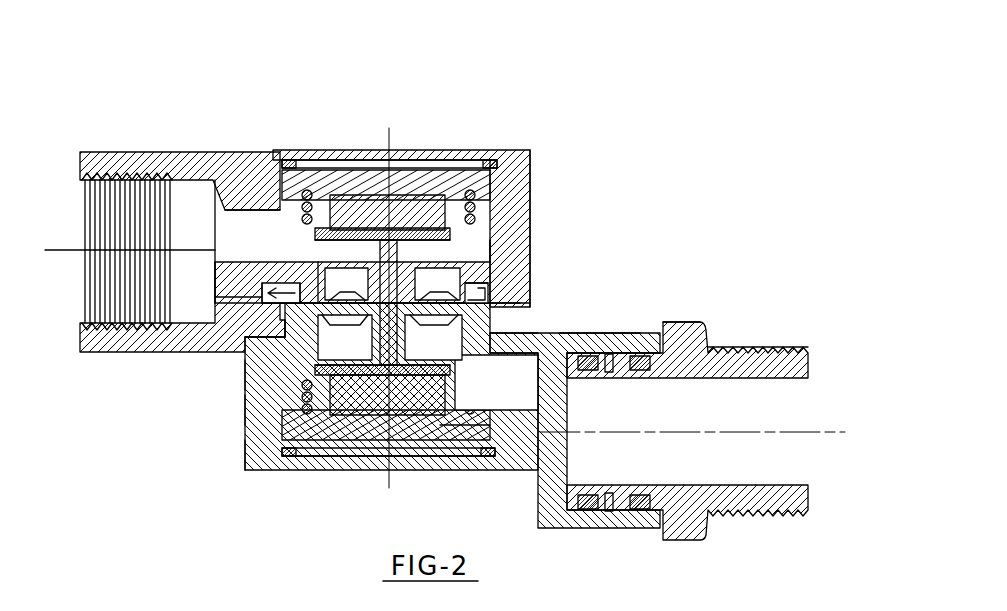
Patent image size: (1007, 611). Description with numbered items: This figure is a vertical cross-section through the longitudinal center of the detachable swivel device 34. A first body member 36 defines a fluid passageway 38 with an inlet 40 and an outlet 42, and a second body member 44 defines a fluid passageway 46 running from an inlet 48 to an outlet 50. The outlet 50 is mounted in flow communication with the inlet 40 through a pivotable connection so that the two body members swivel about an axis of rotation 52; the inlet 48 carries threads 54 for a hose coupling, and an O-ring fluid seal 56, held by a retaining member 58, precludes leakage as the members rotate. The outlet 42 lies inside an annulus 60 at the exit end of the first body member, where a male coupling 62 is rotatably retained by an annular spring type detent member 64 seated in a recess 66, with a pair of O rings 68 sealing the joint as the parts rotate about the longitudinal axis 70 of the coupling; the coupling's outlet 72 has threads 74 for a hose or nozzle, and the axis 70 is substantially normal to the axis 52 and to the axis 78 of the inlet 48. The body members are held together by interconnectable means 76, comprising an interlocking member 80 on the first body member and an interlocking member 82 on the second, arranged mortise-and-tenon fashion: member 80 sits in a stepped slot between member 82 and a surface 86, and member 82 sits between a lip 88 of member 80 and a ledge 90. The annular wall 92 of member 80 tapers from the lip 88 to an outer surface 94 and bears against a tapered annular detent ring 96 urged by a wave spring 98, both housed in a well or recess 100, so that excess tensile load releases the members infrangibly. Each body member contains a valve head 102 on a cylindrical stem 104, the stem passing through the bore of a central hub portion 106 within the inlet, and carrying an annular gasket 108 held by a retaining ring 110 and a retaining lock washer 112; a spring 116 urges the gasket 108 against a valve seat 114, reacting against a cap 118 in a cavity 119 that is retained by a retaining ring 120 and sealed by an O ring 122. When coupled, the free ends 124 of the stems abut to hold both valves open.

The detachable swivel device 34 is at (610, 95).
The first body member 36 is at (565, 327).
The fluid passageway 38 is at (525, 337).
The inlet 40 is at (245, 395).
The outlet 42 is at (600, 340).
The second body member 44 is at (520, 150).
The fluid passageway 46 is at (230, 212).
The inlet 48 is at (80, 305).
The outlet 50 is at (530, 250).
The axis of rotation 52 is at (393, 140).
The threads 54 is at (118, 172).
The fluid seal 56 is at (318, 262).
The retaining member 58 is at (305, 290).
The annulus 60 is at (632, 528).
The coupling 62 is at (685, 322).
The annular spring type detent member 64 is at (635, 345).
The recess 66 is at (610, 510).
The O rings 68 is at (580, 505).
The longitudinal axis 70 is at (840, 432).
The outlet 72 is at (812, 462).
The threads 74 is at (775, 351).
The interconnectable means 76 is at (548, 292).
The axis 78 is at (68, 250).
The interlocking member 80 is at (500, 290).
The interlocking member 82 is at (250, 340).
The surface 86 is at (535, 308).
The lip 88 is at (283, 338).
The ledge 90 is at (250, 375).
The annular wall 92 is at (268, 295).
The outer surface 94 is at (265, 287).
The annular detent ring 96 is at (268, 303).
The wave spring 98 is at (533, 268).
The well or recess 100 is at (330, 300).
The valve head 102 is at (347, 193).
The cylindrical stem 104 is at (412, 335).
The chamber 106 is at (370, 325).
The annular gasket 108 is at (485, 262).
The retaining ring 110 is at (248, 408).
The retaining lock washer 112 is at (455, 378).
The valve seat 114 is at (500, 238).
The spring 116 is at (305, 185).
The cap 118 is at (470, 440).
The cavity 119 is at (325, 463).
The retaining ring 120 is at (283, 160).
The O ring 122 is at (530, 165).
The free end 124 is at (345, 284).